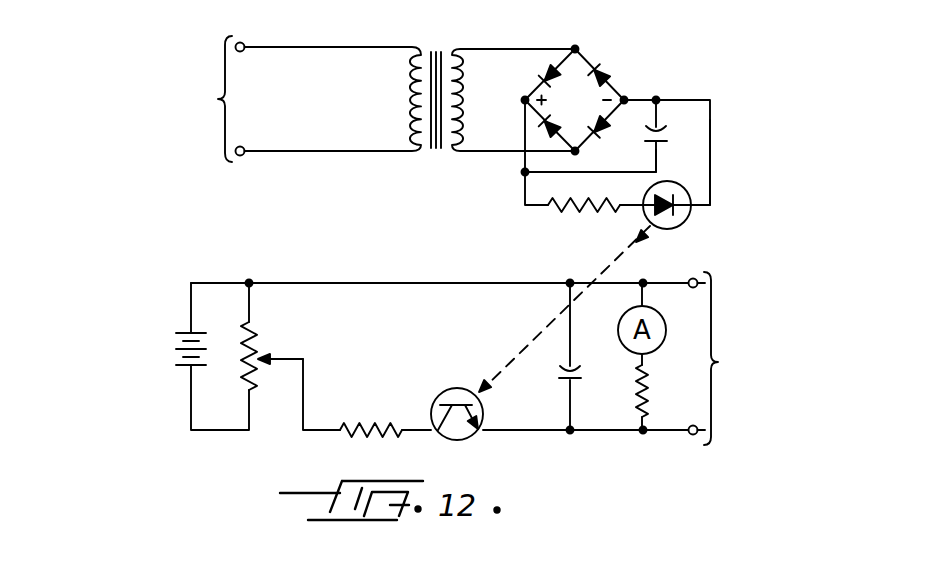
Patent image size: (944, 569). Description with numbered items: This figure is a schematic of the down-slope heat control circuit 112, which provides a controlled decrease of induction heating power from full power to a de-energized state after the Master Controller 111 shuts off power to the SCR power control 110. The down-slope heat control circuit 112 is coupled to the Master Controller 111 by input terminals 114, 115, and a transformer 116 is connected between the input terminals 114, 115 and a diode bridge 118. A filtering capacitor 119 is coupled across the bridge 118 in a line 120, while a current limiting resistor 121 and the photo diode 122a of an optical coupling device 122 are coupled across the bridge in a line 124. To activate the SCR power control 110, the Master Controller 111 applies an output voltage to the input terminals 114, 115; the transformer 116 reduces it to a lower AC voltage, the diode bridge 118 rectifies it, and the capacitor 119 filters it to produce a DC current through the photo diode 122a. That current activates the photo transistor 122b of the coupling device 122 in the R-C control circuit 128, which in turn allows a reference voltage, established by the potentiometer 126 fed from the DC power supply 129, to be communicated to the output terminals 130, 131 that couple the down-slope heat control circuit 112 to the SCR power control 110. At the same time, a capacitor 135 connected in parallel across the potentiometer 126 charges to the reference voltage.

The SCR power control 110 is at (779, 358).
The Master Controller 111 is at (133, 99).
The down-slope heat control circuit 112 is at (335, 162).
The input terminal 114 is at (245, 148).
The input terminal 115 is at (245, 44).
The transformer 116 is at (437, 47).
The diode bridge 118 is at (612, 62).
The filtering capacitor 119 is at (673, 131).
The line 120 is at (658, 160).
The current limiting resistor 121 is at (578, 211).
The optical coupling device 122 is at (608, 259).
The photo diode 122a is at (691, 212).
The photo transistor 122b is at (449, 388).
The line 124 is at (712, 177).
The potentiometer 126 is at (297, 358).
The R-C control circuit 128 is at (410, 272).
The DC power supply 129 is at (172, 352).
The output terminal 130 is at (705, 283).
The output terminal 131 is at (705, 433).
The capacitor 135 is at (582, 374).